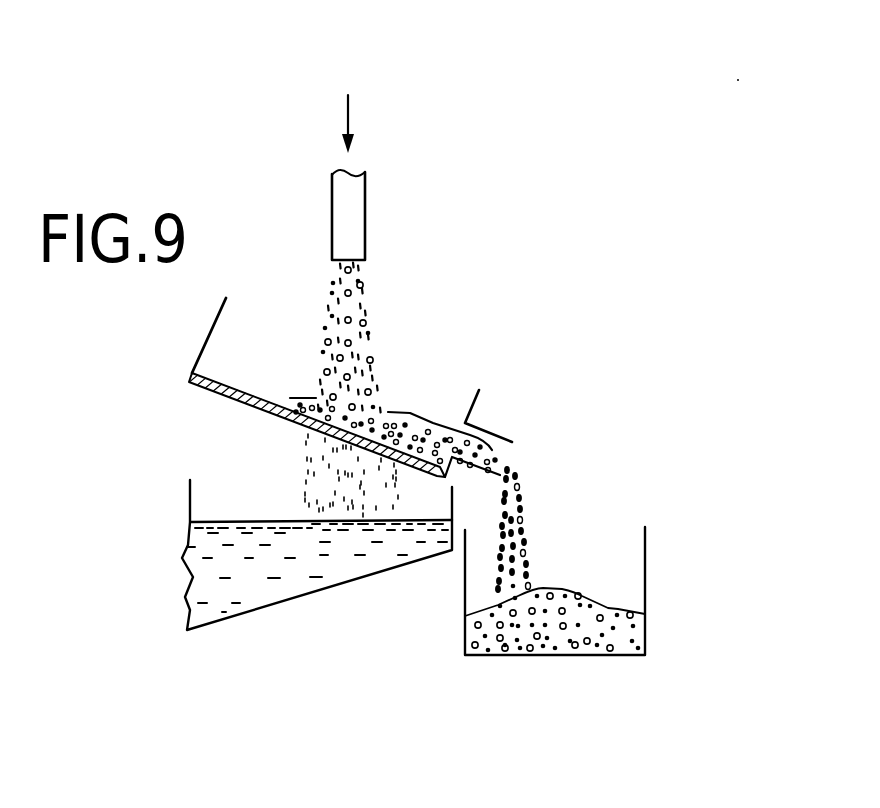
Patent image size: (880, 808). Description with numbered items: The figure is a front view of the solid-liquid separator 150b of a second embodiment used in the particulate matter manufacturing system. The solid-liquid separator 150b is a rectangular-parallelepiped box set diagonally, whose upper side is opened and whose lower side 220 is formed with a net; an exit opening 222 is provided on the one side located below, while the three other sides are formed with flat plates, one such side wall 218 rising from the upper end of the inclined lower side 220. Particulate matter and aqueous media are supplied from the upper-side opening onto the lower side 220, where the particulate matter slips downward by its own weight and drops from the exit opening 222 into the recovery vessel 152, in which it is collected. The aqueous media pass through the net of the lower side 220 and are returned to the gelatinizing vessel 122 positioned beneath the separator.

The side wall of screen 218 is at (215, 322).
The lower side 220 is at (232, 395).
The exit opening 222 is at (492, 452).
The solid-liquid separator 150b is at (486, 337).
The gelatinizing vessel 122 is at (282, 593).
The recovery vessel 152 is at (645, 613).